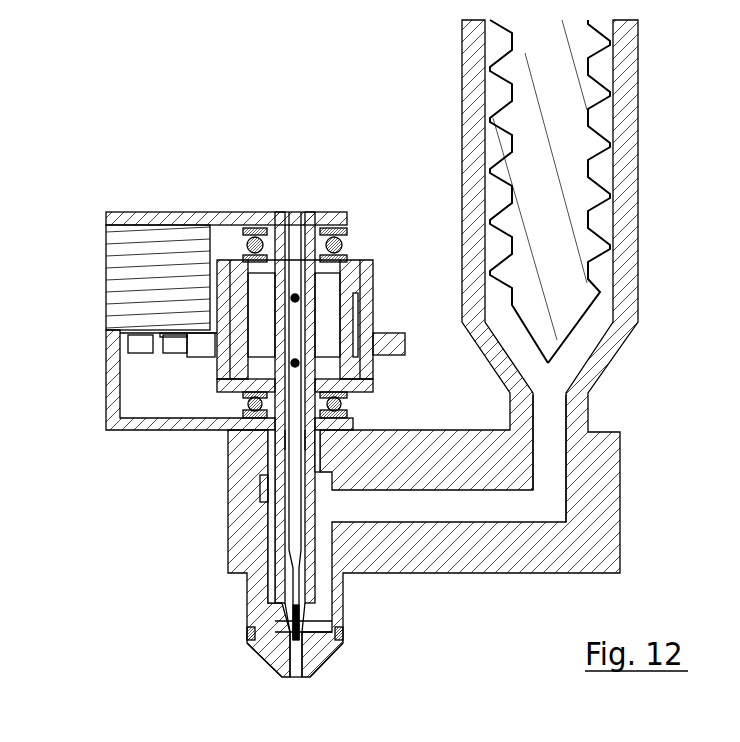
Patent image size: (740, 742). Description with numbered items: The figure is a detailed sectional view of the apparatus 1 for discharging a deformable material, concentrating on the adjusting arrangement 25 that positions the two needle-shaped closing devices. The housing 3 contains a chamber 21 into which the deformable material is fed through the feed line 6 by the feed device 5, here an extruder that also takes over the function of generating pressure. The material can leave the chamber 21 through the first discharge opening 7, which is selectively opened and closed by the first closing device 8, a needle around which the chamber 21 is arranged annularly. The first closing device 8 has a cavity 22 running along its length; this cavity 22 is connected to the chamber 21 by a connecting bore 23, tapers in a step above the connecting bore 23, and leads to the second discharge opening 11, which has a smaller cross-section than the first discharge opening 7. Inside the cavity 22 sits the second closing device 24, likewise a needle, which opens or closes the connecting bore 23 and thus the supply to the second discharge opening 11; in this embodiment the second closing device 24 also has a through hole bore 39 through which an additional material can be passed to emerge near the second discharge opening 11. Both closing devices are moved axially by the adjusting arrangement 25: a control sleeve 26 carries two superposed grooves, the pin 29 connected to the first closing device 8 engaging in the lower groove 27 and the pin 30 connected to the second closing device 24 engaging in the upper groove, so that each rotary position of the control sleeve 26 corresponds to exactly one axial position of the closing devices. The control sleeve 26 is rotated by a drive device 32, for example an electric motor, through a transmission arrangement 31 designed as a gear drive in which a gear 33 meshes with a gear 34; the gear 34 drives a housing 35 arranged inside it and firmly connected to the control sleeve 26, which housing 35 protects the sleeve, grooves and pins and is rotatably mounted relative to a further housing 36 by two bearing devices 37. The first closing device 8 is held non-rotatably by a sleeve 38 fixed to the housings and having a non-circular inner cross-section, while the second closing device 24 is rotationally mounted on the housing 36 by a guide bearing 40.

The apparatus 1 is at (235, 369).
The housing 3 is at (553, 550).
The feed device 5 is at (595, 121).
The feed line 6 is at (553, 488).
The first discharge opening 7 is at (320, 655).
The first closing device 8 is at (283, 627).
The second discharge opening 11 is at (295, 675).
The chamber 21 is at (267, 522).
The cavity 22 is at (282, 602).
The connecting bore 23 is at (310, 628).
The second closing device 24 is at (283, 582).
The adjusting arrangement 25 is at (90, 259).
The control sleeve 26 is at (326, 313).
The lower groove 27 is at (300, 362).
The pin 29 is at (273, 433).
The pin 30 is at (298, 299).
The transmission arrangement 31 is at (198, 355).
The drive device 32 is at (128, 293).
The gear 33 is at (128, 340).
The gear 34 is at (190, 350).
The housing 35 is at (368, 298).
The housing 36 is at (175, 218).
The bearing devices 37 is at (255, 228).
The sleeve 38 is at (273, 465).
The through hole bore 39 is at (290, 545).
The guide bearing 40 is at (310, 214).